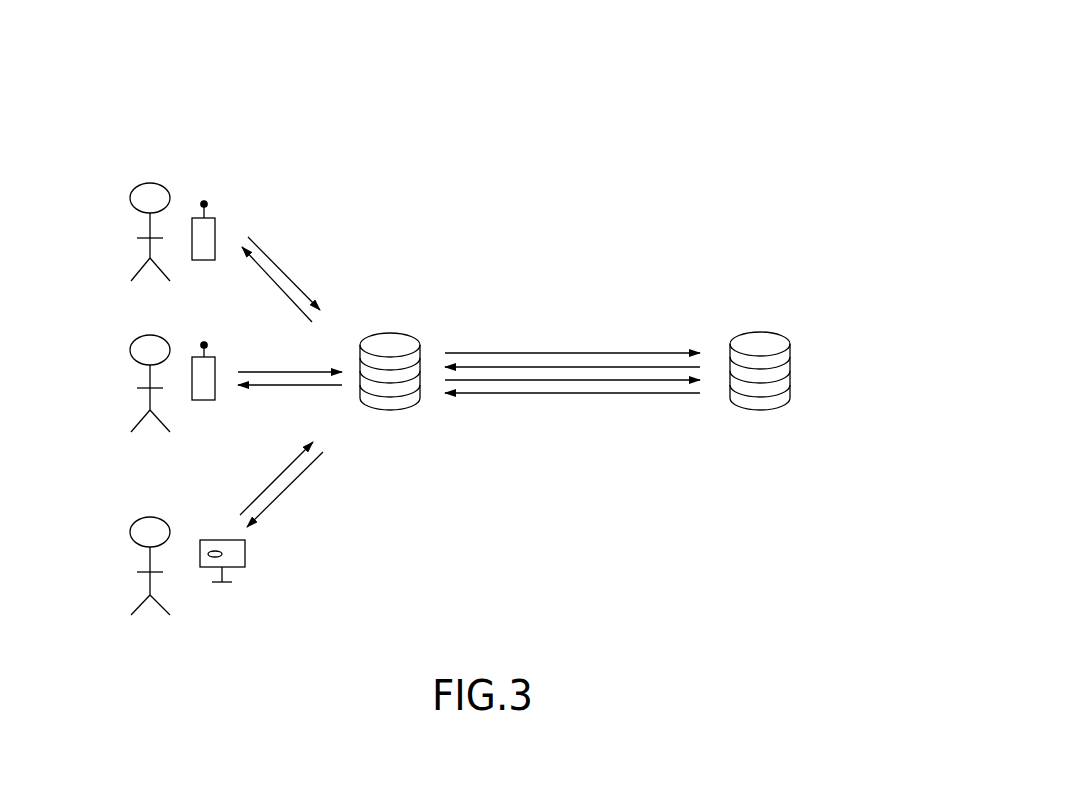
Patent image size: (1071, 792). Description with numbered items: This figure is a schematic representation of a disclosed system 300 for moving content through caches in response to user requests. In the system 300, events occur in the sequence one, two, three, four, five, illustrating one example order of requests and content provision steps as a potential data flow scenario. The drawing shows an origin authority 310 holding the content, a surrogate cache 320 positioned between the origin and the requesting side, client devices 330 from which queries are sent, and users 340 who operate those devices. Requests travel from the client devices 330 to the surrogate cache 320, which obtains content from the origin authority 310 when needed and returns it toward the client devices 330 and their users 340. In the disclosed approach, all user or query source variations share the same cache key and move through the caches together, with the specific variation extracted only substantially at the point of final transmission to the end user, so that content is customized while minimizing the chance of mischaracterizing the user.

The system 300 is at (612, 168).
The origin server (authority) 310 is at (773, 340).
The surrogate cache 320 is at (398, 340).
The client device 330 is at (215, 228).
The user 340 is at (138, 222).